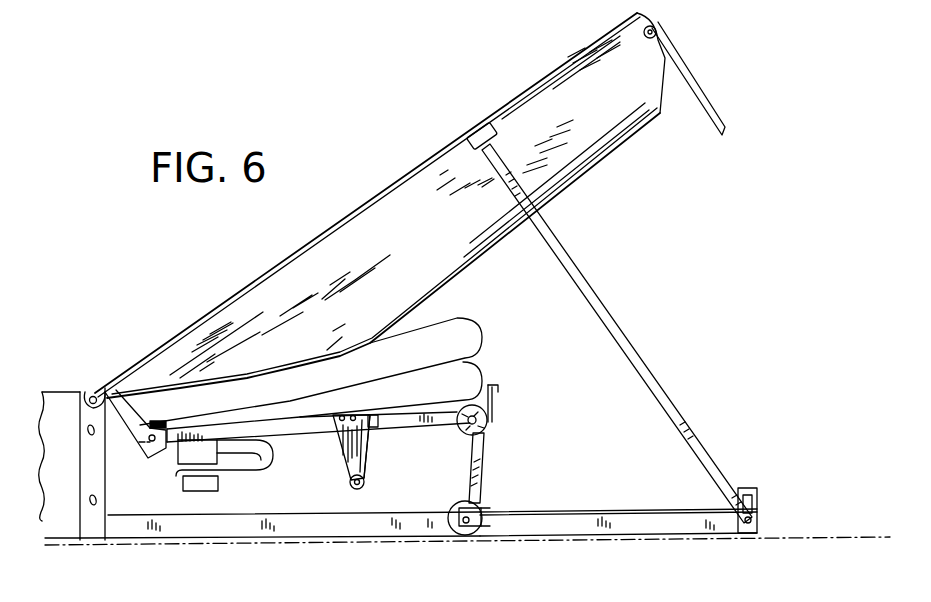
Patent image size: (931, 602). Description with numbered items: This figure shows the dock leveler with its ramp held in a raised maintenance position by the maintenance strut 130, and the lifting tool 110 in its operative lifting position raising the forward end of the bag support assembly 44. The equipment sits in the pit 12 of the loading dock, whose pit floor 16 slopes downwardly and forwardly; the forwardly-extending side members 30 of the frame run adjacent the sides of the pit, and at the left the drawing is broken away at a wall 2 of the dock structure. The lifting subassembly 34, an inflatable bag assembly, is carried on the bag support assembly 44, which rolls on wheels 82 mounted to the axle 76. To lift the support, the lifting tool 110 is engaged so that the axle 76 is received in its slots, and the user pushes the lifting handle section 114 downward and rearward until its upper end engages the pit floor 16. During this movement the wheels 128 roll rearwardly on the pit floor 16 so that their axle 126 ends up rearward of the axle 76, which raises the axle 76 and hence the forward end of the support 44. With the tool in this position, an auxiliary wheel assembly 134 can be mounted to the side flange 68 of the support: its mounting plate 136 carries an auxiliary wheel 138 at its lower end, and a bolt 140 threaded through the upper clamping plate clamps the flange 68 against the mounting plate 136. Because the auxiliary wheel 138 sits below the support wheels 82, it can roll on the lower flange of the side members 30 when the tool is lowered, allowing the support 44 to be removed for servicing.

The loading dock wall 2 is at (87, 433).
The pit 12 is at (584, 420).
The pit floor 16 is at (800, 537).
The side members 30 is at (222, 512).
The lifting subassembly 34 is at (535, 328).
The bag support assembly 44 is at (315, 444).
The side flange 68 is at (395, 427).
The axle 76 is at (491, 410).
The wheels 82 is at (470, 438).
The lifting tool 110 is at (585, 462).
The lifting handle section 114 is at (648, 507).
The axle 126 is at (472, 535).
The wheels 128 is at (463, 541).
The maintenance strut 130 is at (643, 355).
The auxiliary wheel assembly 134 is at (378, 486).
The mounting plate 136 is at (368, 460).
The auxiliary wheel 138 is at (350, 488).
The bolt 140 is at (343, 410).